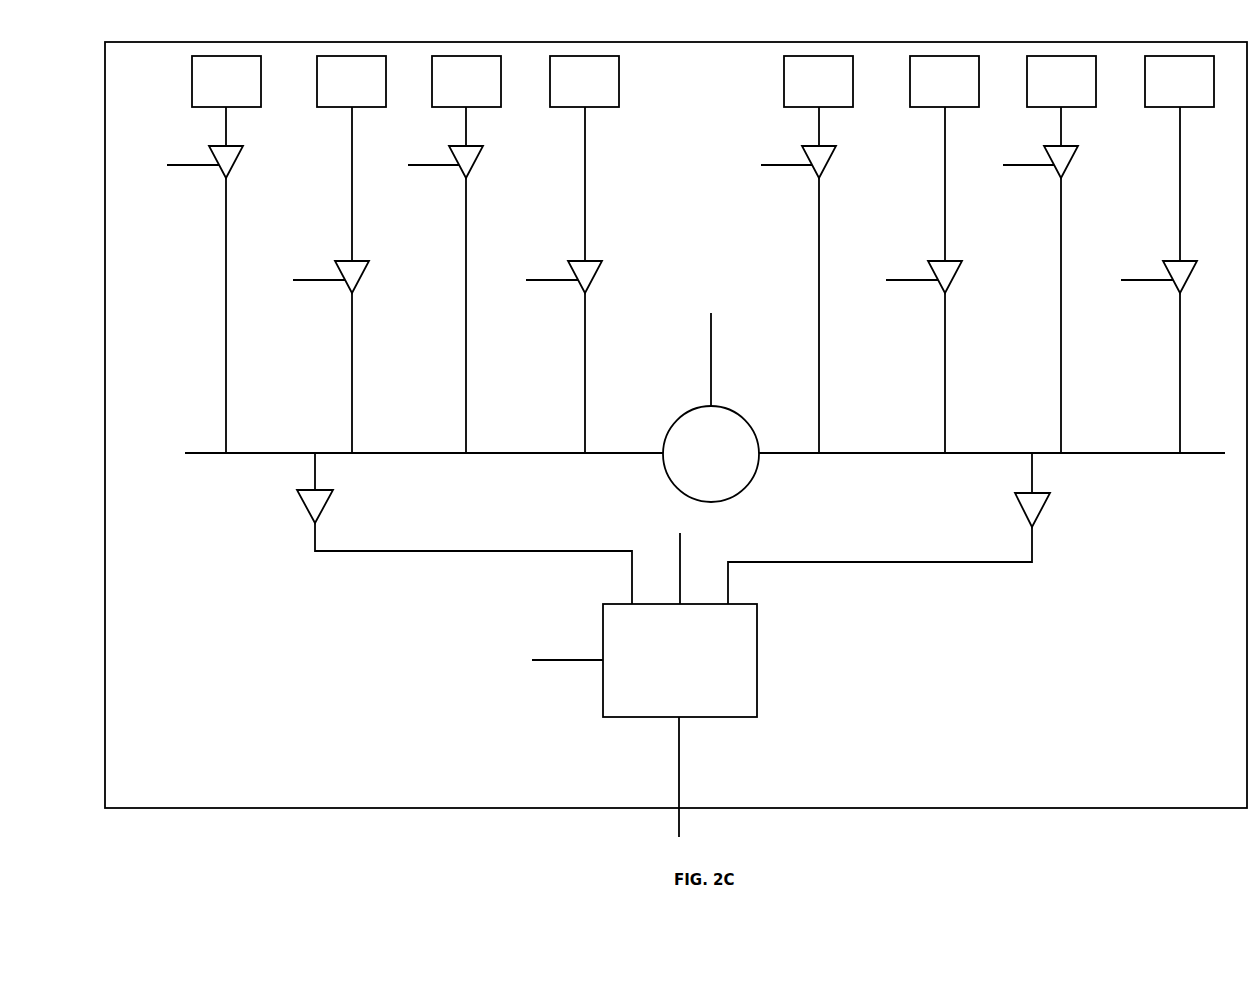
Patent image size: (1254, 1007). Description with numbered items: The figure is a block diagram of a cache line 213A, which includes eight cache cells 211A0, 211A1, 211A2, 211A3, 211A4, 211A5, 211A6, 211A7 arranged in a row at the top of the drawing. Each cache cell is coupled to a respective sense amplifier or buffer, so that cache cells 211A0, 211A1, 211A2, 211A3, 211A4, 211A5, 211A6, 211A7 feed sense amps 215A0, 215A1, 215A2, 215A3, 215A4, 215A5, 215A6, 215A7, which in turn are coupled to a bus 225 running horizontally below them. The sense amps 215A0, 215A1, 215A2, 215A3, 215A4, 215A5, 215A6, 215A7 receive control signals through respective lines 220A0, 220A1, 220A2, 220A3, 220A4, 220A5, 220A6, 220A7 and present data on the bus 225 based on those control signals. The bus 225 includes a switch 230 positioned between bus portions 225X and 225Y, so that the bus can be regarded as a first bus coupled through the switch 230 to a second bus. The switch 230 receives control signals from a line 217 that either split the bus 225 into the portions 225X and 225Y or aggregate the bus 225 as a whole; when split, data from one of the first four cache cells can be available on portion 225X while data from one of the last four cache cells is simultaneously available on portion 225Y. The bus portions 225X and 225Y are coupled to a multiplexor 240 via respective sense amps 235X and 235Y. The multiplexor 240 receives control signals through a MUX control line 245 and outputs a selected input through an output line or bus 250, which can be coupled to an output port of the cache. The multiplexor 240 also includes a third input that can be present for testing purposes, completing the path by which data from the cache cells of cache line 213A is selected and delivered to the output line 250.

The cache cell 211A0 is at (226, 81).
The cache cell 211A1 is at (351, 81).
The cache cell 211A2 is at (466, 81).
The cache cell 211A3 is at (584, 81).
The cache cell 211A4 is at (818, 81).
The cache cell 211A5 is at (944, 81).
The cache cell 211A6 is at (1061, 81).
The cache cell 211A7 is at (1179, 81).
The sense amplifier 215A0 is at (232, 166).
The sense amplifier 215A1 is at (361, 283).
The sense amplifier 215A2 is at (472, 166).
The sense amplifier 215A3 is at (594, 283).
The sense amplifier 215A4 is at (825, 166).
The sense amplifier 215A5 is at (954, 283).
The sense amplifier 215A6 is at (1067, 166).
The sense amplifier 215A7 is at (1189, 283).
The control line 220A0 is at (193, 166).
The control line 220A1 is at (318, 281).
The control line 220A2 is at (438, 166).
The control line 220A3 is at (545, 281).
The control line 220A4 is at (783, 166).
The control line 220A5 is at (912, 281).
The control line 220A6 is at (1032, 166).
The control line 220A7 is at (1140, 281).
The switch control line 217 is at (711, 352).
The bus 225 is at (613, 454).
The bus portion 225X is at (490, 454).
The bus portion 225Y is at (853, 454).
The switch 230 is at (711, 454).
The sense amplifier 235X is at (323, 512).
The sense amplifier 235Y is at (1042, 513).
The multiplexor 240 is at (680, 565).
The MUX control line 245 is at (573, 662).
The output line 250 is at (679, 768).
The cache line 213A is at (676, 425).